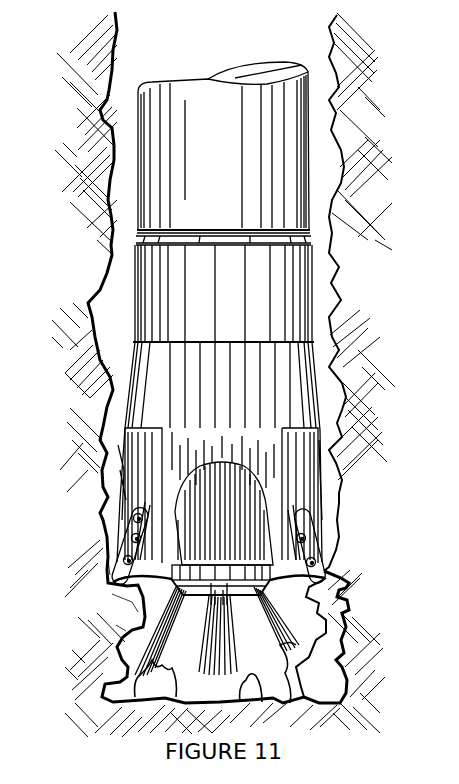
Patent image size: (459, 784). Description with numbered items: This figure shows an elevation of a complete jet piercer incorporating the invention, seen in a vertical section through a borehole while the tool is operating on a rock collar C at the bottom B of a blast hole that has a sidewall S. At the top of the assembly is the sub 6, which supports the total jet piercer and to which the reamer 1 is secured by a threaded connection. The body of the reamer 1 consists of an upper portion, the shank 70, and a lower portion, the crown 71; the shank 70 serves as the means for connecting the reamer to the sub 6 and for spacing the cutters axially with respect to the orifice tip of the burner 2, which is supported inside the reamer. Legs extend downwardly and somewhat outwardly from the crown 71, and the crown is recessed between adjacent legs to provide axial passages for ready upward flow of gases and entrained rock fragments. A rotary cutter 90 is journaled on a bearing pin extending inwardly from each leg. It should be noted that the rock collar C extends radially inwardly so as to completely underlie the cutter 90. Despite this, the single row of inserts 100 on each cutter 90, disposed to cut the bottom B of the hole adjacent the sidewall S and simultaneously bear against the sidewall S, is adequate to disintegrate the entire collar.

The reamer 1 is at (227, 369).
The burner 2 is at (276, 588).
The sub 6 is at (321, 155).
The shank 70 is at (147, 282).
The crown 71 is at (126, 404).
The rotary cutter 90 is at (329, 572).
The inserts 100 is at (105, 522).
The sidewall S is at (107, 567).
The bottom B is at (115, 598).
The rock collar C is at (115, 626).